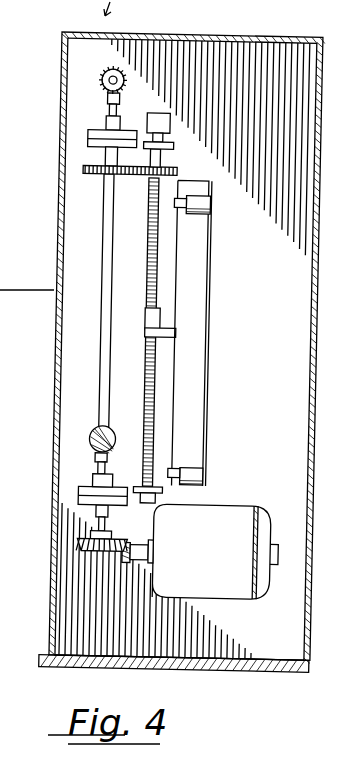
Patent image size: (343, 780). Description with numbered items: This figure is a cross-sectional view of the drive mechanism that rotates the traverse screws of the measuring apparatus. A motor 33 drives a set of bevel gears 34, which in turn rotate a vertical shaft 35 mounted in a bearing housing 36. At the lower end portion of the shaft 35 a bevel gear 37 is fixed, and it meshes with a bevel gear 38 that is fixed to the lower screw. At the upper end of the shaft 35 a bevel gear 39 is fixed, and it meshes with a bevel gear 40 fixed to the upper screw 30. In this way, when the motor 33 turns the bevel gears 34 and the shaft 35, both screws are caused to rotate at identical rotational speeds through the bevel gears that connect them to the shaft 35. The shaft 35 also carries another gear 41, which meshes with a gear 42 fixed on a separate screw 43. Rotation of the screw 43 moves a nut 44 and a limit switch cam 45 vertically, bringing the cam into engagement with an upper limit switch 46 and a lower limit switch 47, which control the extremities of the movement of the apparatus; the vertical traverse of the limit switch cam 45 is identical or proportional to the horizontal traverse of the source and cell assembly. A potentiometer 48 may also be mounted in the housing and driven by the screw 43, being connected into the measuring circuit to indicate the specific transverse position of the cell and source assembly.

The upper screw 30 is at (110, 79).
The motor 33 is at (215, 552).
The set of bevel gears 34 is at (129, 542).
The shaft 35 is at (108, 262).
The bearing housing 36 is at (81, 493).
The bevel gear 37 is at (104, 450).
The bevel gear 38 is at (100, 436).
The bevel gear 39 is at (112, 93).
The bevel gear 40 is at (114, 68).
The gear 41 is at (100, 176).
The gear 42 is at (151, 176).
The screw 43 is at (150, 259).
The nut 44 is at (150, 322).
The limit switch cam 45 is at (170, 331).
The upper limit switch 46 is at (204, 206).
The lower limit switch 47 is at (206, 470).
The potentiometer 48 is at (173, 130).